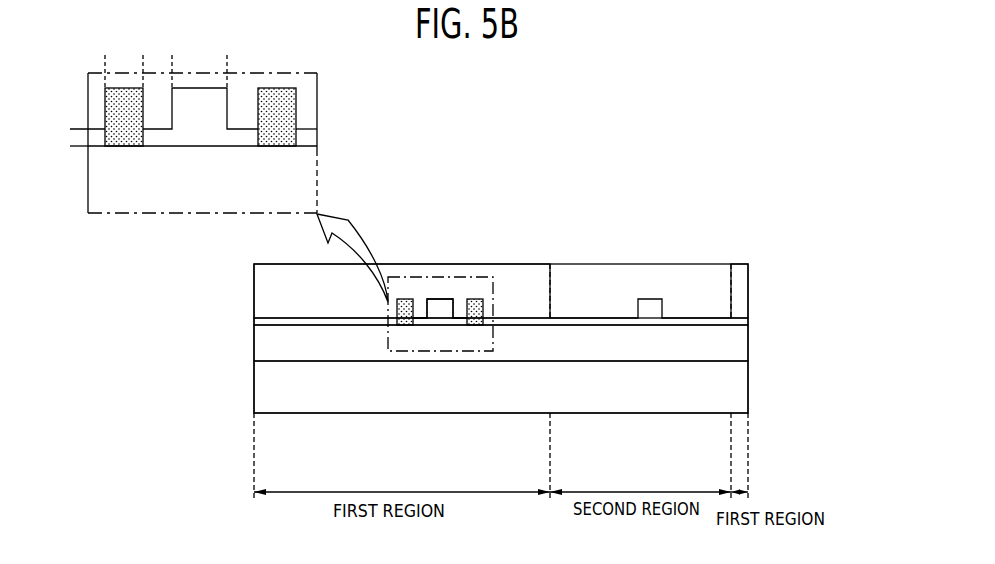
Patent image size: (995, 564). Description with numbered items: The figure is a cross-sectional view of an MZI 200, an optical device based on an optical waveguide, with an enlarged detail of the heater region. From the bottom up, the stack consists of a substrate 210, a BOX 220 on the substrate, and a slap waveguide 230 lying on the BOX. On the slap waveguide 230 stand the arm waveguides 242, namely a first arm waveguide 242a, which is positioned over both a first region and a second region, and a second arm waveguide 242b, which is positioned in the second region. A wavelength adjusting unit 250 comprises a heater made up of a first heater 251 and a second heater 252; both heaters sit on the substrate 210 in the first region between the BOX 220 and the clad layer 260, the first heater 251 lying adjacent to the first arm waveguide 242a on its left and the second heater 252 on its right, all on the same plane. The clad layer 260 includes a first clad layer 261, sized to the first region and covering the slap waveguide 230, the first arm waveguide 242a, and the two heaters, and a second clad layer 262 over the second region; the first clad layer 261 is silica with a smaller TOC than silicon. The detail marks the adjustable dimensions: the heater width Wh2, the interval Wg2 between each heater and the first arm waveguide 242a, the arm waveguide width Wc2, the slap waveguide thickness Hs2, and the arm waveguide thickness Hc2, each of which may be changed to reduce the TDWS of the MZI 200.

The MZI 200 is at (743, 145).
The substrate 210 is at (738, 389).
The BOX 220 is at (738, 348).
The slap waveguide 230 is at (738, 325).
The arm waveguides 242 is at (515, 196).
The first arm waveguide 242a is at (440, 298).
The second arm waveguide 242b is at (645, 299).
The wavelength adjusting unit 250 is at (507, 449).
The first heater 251 is at (405, 325).
The second heater 252 is at (475, 325).
The clad layer 260 is at (768, 196).
The first clad layer 261 is at (532, 276).
The second clad layer 262 is at (603, 276).
The width of the heater Wh2 is at (143, 63).
The interval between the heater and the first arm waveguide Wg2 is at (172, 63).
The width of the arm waveguides Wc2 is at (227, 63).
The thickness of the slap waveguide Hs2 is at (76, 102).
The thickness of the arm waveguides Hc2 is at (164, 88).